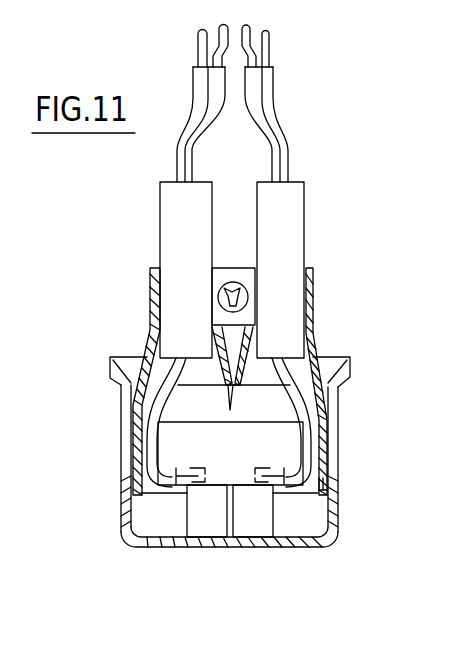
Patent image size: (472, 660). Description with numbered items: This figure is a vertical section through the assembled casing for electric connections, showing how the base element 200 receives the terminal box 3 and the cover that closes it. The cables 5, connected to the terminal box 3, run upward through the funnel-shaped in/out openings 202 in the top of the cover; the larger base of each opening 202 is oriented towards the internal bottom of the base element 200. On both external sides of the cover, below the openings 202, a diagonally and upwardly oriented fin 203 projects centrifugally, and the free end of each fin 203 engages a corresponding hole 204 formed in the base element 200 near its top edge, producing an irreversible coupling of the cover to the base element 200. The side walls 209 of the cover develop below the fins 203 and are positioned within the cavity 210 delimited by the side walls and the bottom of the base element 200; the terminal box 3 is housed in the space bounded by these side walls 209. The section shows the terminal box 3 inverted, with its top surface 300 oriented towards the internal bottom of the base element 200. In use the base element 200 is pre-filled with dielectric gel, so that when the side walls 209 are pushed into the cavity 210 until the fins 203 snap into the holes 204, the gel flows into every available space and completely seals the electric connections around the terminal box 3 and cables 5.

The cables 5 is at (300, 130).
The terminal box 3 is at (245, 461).
The base element 200 is at (120, 535).
The funnel-shaped in/out openings 202 is at (145, 338).
The fin 203 is at (127, 383).
The hole 204 is at (120, 407).
The side walls 209 is at (333, 503).
The cavity 210 is at (158, 522).
The top surface 300 is at (279, 485).